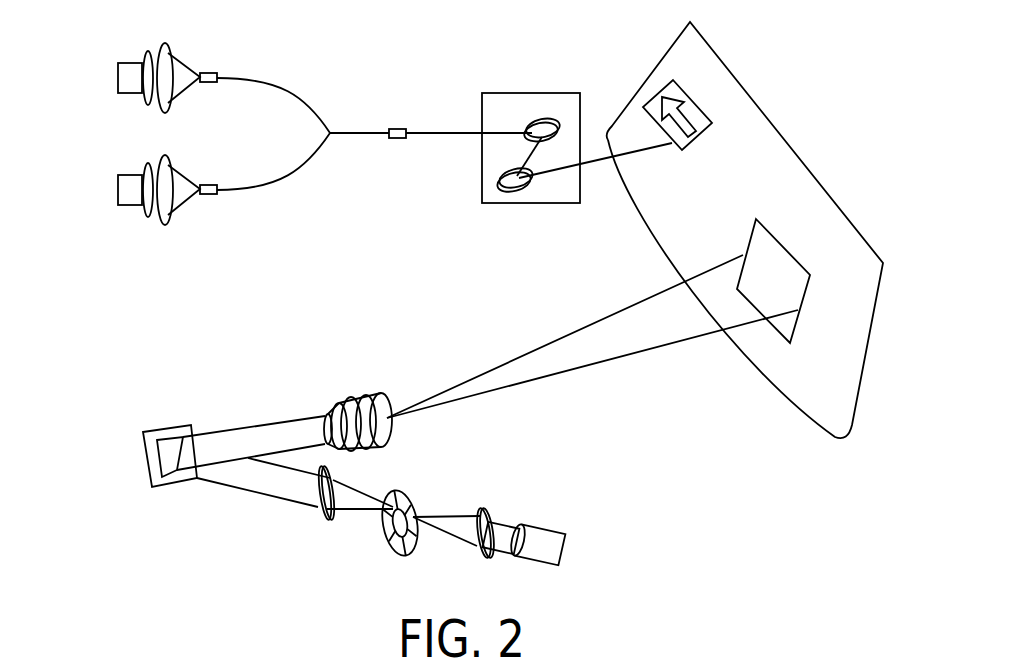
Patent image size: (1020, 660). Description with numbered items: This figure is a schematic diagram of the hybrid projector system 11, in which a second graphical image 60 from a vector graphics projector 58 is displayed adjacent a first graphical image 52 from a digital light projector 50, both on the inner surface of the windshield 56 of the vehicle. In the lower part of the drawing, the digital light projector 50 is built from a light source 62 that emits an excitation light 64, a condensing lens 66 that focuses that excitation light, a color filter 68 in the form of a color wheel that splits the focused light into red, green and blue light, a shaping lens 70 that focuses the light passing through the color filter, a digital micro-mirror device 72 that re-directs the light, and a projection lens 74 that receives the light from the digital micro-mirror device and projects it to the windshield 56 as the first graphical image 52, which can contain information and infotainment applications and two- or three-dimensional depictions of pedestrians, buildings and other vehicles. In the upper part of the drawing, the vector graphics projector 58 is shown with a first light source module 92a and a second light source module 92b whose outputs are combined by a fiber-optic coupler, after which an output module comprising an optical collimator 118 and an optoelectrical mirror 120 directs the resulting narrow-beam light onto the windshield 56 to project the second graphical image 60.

The hybrid projector system 11 is at (232, 545).
The digital light projector 50 is at (325, 522).
The first graphical image 52 is at (783, 246).
The windshield 56 is at (800, 378).
The vector graphics projector 58 is at (312, 124).
The second graphical image 60 is at (693, 98).
The light source 62 is at (558, 547).
The excitation light 64 is at (502, 534).
The condensing lens 66 is at (483, 556).
The color filter 68 is at (417, 493).
The shaping lens 70 is at (322, 516).
The digital micro-mirror device 72 is at (170, 432).
The projection lens 74 is at (357, 408).
The first light source module 92a is at (119, 94).
The second light source module 92b is at (119, 204).
The optical collimator 118 is at (397, 139).
The optoelectrical mirror 120 is at (530, 204).